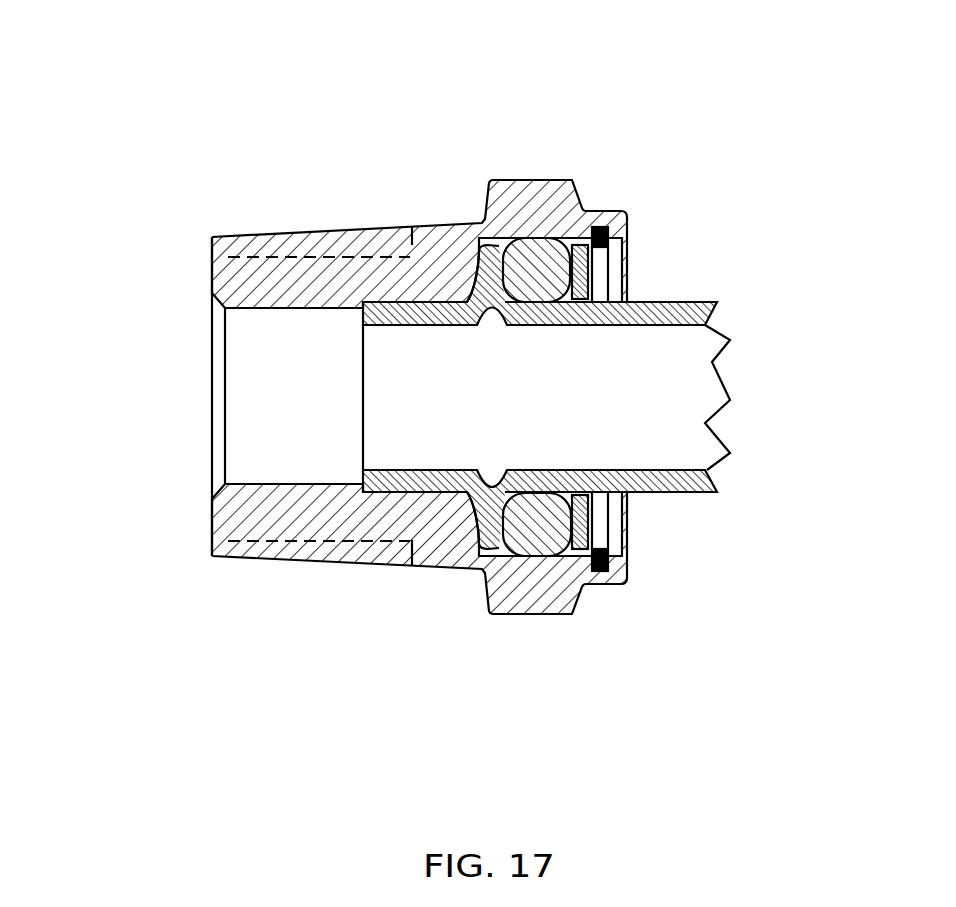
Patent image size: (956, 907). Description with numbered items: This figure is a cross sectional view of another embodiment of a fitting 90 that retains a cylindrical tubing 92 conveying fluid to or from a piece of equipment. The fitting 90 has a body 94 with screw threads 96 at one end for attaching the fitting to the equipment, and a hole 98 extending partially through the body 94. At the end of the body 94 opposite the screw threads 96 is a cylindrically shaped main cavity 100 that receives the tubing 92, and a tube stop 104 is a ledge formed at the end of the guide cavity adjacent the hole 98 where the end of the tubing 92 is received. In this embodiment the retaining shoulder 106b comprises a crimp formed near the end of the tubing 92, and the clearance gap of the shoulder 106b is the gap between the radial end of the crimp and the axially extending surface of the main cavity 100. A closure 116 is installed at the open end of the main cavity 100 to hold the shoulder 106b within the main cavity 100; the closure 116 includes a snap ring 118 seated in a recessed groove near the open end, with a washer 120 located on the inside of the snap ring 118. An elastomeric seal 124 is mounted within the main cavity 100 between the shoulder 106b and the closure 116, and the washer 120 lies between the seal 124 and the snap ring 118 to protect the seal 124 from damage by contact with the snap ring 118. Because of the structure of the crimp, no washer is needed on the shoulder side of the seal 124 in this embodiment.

The fitting 90 is at (431, 426).
The tubing 92 is at (674, 302).
The body 94 is at (447, 223).
The screw threads 96 is at (283, 563).
The hole 98 is at (253, 413).
The main cavity 100 is at (517, 242).
The tube stop 104 is at (343, 303).
The retaining shoulder 106b is at (502, 238).
The closure 116 is at (603, 228).
The snap ring 118 is at (608, 552).
The washer 120 is at (578, 556).
The elastomeric seal 124 is at (524, 540).